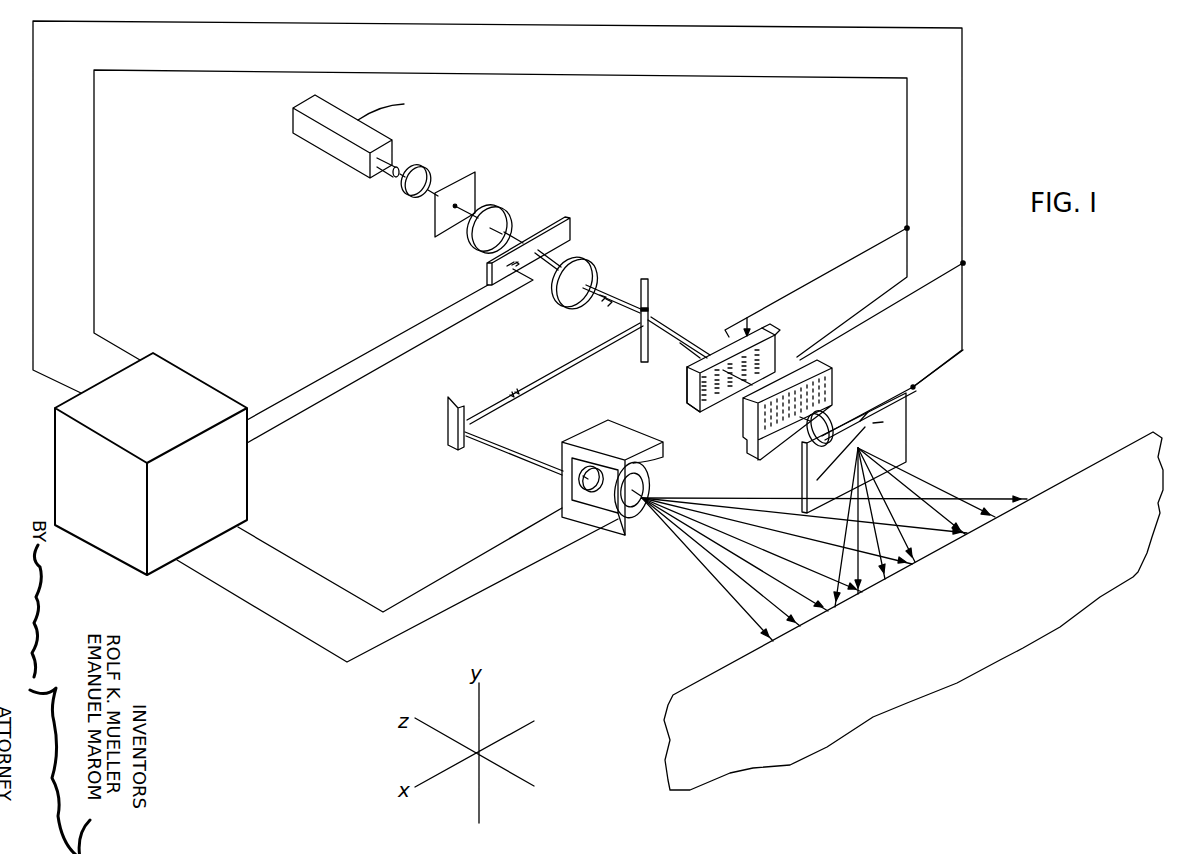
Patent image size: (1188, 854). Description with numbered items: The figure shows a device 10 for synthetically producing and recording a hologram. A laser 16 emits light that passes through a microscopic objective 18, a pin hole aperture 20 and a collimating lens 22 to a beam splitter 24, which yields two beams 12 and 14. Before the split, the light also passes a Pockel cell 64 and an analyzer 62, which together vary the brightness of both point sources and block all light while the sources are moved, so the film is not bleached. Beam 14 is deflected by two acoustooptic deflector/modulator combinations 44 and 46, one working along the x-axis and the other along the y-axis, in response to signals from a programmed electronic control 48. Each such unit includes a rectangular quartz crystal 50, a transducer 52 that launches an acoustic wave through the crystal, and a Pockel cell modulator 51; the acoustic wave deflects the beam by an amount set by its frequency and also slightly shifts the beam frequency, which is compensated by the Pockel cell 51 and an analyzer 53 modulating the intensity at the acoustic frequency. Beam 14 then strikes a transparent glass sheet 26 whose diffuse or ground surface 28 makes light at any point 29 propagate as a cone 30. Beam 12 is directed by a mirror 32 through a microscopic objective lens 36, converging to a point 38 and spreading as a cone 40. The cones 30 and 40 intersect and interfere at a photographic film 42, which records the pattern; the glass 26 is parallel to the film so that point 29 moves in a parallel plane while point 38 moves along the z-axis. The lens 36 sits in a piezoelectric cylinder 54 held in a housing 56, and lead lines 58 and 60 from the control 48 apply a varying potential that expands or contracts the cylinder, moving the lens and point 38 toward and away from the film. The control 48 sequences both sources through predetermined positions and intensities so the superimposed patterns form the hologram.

The device 10 is at (736, 162).
The beam 12 is at (528, 390).
The beam 14 is at (706, 343).
The laser 16 is at (345, 165).
The microscopic objective 18 is at (426, 168).
The pin hole aperture 20 is at (478, 182).
The collimating lens 22 is at (512, 214).
The beam splitter 24 is at (652, 292).
The transparent glass sheet 26 is at (920, 385).
The diffuse or ground surface 28 is at (905, 408).
The point 29 is at (862, 447).
The cone 30 is at (923, 493).
The mirror 32 is at (447, 432).
The microscopic objective lens 36 is at (618, 506).
The point 38 is at (652, 490).
The cone 40 is at (738, 574).
The photographic film 42 is at (1085, 480).
The acoustooptic deflector/modulator combination 44 is at (747, 324).
The acoustooptic deflector/modulator combination 46 is at (838, 378).
The programmed electronic control 48 is at (188, 382).
The crystal 50 is at (698, 395).
The Pockel cell modulator 51 is at (688, 382).
The transducer 52 is at (772, 326).
The analyzer 53 is at (812, 442).
The piezoelectric cylinder 54 is at (650, 478).
The housing 56 is at (592, 432).
The lead line 58 is at (468, 565).
The lead line 60 is at (493, 582).
The analyzer 62 is at (597, 273).
The Pockel cell 64 is at (577, 226).